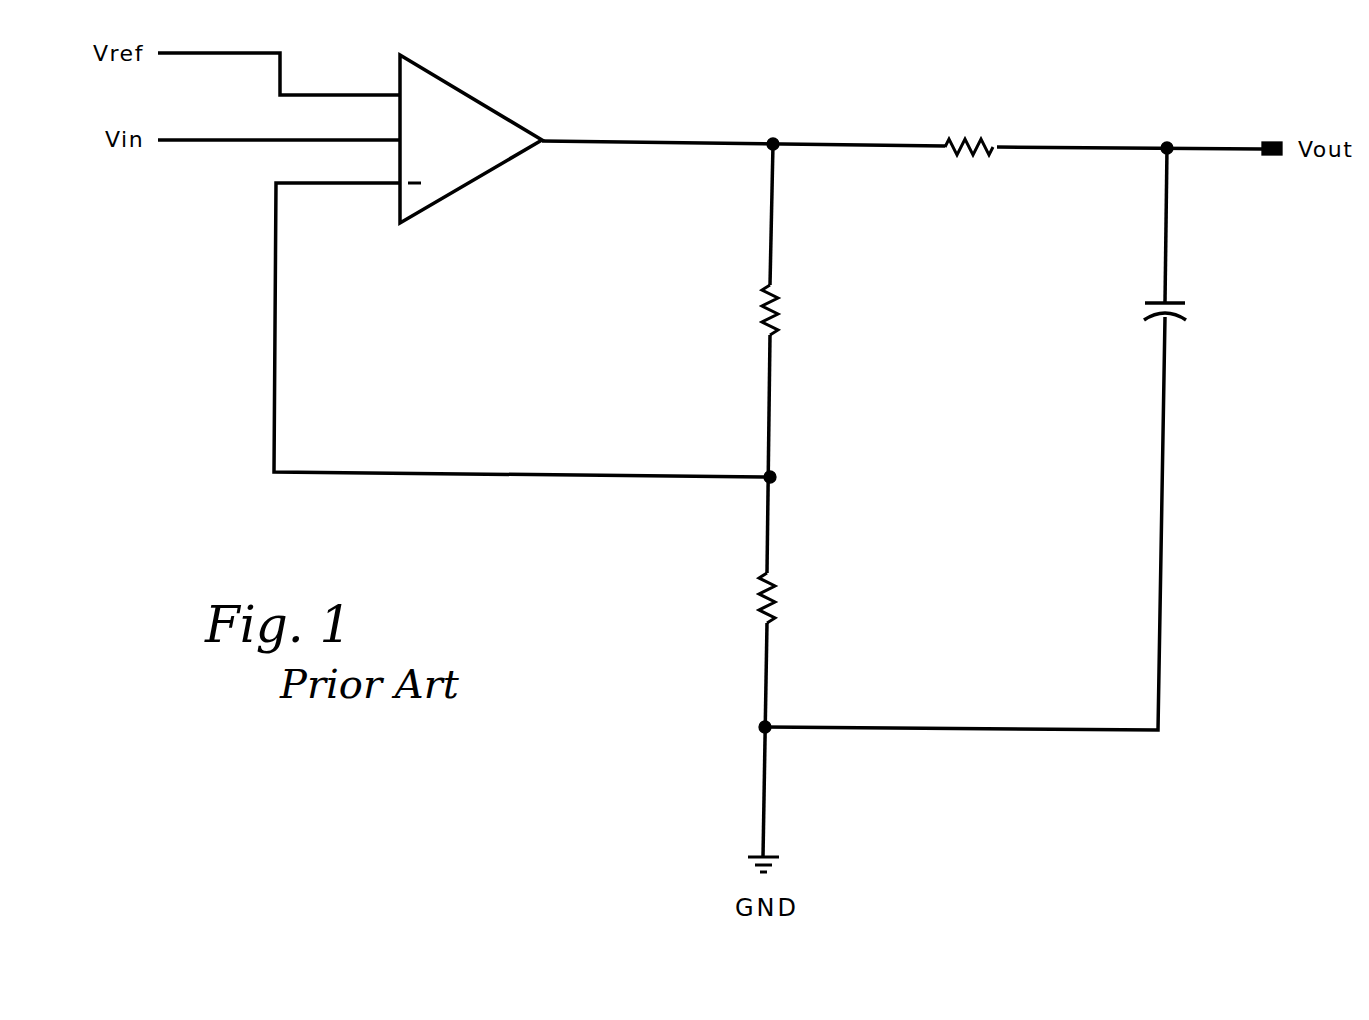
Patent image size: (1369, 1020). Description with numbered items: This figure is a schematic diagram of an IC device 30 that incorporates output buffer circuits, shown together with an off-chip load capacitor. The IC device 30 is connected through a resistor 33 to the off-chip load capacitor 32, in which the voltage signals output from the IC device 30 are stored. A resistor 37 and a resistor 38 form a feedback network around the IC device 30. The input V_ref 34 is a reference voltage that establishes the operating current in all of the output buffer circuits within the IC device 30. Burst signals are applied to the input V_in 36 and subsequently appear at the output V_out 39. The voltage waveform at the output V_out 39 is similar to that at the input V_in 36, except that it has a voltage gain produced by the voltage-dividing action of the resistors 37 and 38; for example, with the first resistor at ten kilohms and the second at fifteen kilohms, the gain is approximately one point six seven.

The IC device 30 is at (486, 108).
The off-chip load capacitor 32 is at (1186, 312).
The resistor 33 is at (988, 134).
The input V_ref 34 is at (372, 94).
The input V_in 36 is at (371, 139).
The resistor 37 is at (793, 306).
The resistor 38 is at (789, 597).
The output V_out 39 is at (1279, 132).